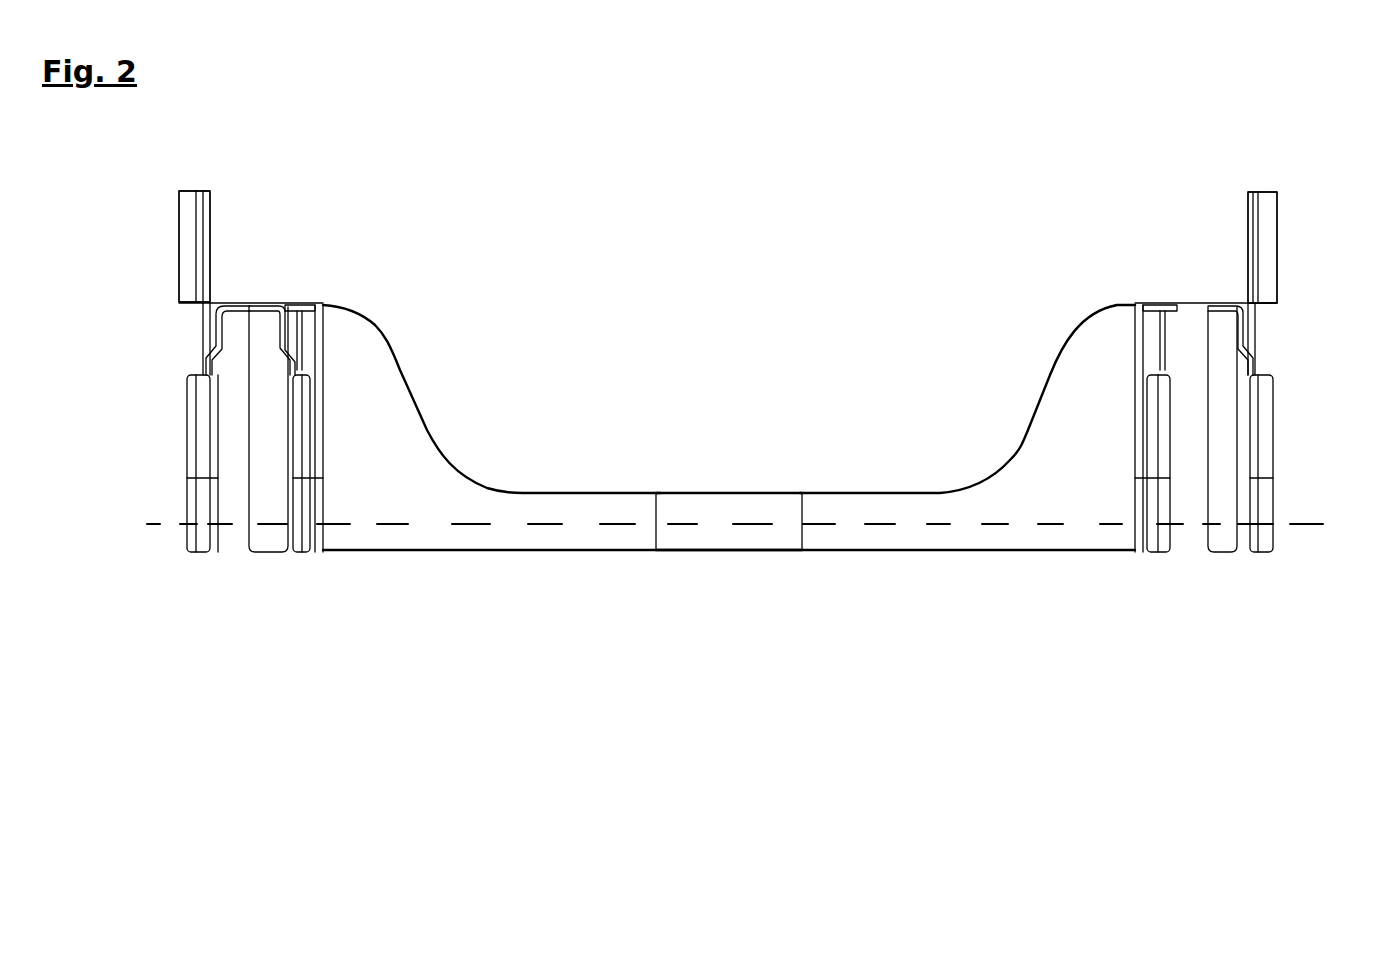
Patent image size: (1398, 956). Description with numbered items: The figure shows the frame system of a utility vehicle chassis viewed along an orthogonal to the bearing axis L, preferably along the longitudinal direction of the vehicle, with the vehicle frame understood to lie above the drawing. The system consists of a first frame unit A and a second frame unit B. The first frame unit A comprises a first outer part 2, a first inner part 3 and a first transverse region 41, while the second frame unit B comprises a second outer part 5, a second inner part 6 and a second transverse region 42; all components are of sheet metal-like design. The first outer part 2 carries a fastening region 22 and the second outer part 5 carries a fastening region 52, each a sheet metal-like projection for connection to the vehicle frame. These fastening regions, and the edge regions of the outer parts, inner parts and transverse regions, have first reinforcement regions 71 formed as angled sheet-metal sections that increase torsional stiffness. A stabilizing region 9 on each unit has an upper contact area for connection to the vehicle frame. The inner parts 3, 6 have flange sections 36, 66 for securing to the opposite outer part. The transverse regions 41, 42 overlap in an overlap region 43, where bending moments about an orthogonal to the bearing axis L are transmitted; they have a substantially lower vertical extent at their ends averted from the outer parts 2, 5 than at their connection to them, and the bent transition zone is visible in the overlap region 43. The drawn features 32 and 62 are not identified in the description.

The first outer part 2 is at (1333, 592).
The first inner part 3 is at (1142, 620).
The second outer part 5 is at (200, 553).
The second inner part 6 is at (315, 632).
The stabilizing region 9 is at (220, 323).
The fastening region 22 is at (1253, 250).
The shoulder portion 32 is at (1148, 303).
The flange section 36 is at (1187, 348).
The first transverse region 41 is at (933, 500).
The second transverse region 42 is at (530, 507).
The overlap region 43 is at (797, 484).
The fastening region 52 is at (207, 237).
The top plate 62 is at (300, 305).
The flange section 66 is at (262, 395).
The first reinforcement region 71 is at (188, 217).
The first frame unit A is at (1222, 582).
The second frame unit B is at (236, 582).
The bearing axis L is at (1023, 625).